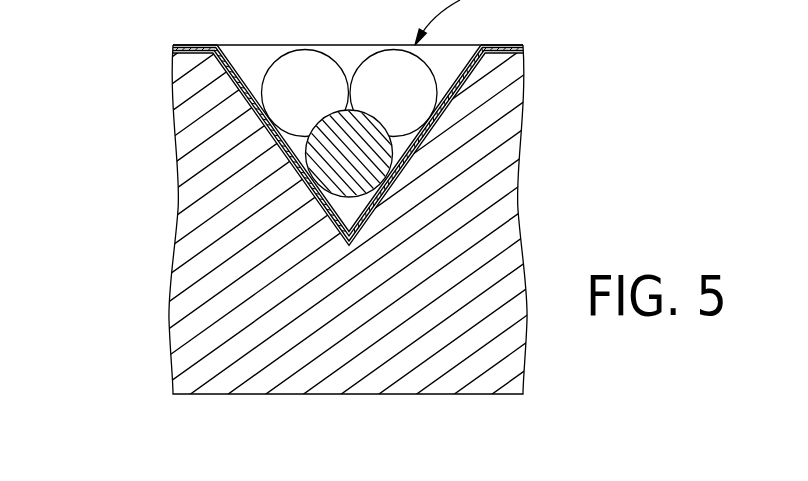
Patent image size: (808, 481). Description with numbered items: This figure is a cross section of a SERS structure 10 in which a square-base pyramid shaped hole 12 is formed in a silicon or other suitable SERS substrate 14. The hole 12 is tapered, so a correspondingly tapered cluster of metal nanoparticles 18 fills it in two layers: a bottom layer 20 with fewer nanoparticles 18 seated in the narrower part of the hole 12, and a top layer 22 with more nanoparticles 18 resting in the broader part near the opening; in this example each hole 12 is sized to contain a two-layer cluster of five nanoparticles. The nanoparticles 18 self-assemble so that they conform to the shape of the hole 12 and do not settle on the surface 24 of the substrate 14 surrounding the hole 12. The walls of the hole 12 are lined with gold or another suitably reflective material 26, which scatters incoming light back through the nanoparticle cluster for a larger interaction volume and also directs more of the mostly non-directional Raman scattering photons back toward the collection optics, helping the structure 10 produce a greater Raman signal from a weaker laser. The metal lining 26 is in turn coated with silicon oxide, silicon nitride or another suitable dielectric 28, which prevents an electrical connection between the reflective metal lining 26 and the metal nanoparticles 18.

The structure 10 is at (404, 202).
The hole 12 is at (450, 55).
The substrate 14 is at (513, 151).
The metal nanoparticles 18 is at (329, 114).
The bottom layer 20 is at (381, 167).
The top layer 22 is at (288, 57).
The surface 24 is at (193, 45).
The reflective lining 26 is at (523, 52).
The dielectric 28 is at (508, 45).